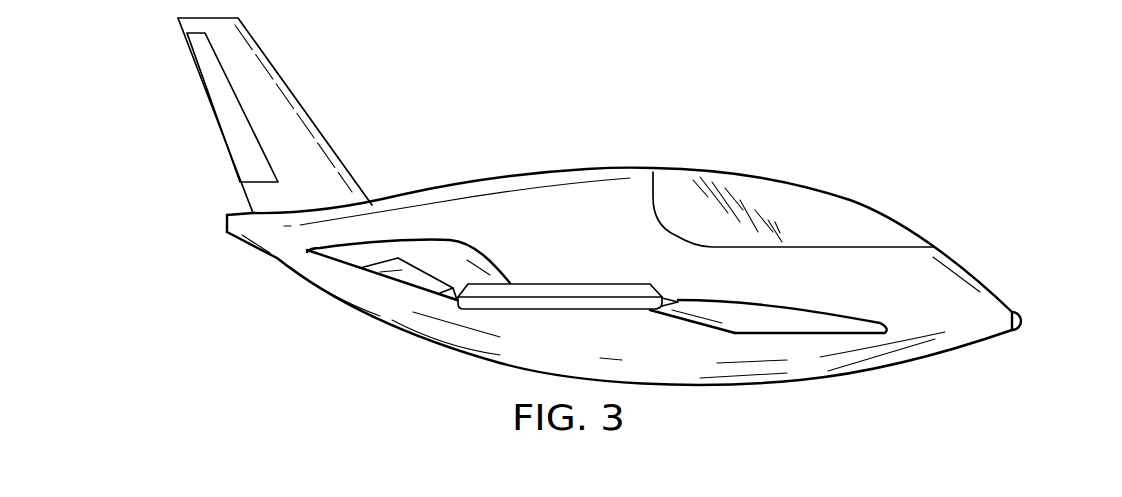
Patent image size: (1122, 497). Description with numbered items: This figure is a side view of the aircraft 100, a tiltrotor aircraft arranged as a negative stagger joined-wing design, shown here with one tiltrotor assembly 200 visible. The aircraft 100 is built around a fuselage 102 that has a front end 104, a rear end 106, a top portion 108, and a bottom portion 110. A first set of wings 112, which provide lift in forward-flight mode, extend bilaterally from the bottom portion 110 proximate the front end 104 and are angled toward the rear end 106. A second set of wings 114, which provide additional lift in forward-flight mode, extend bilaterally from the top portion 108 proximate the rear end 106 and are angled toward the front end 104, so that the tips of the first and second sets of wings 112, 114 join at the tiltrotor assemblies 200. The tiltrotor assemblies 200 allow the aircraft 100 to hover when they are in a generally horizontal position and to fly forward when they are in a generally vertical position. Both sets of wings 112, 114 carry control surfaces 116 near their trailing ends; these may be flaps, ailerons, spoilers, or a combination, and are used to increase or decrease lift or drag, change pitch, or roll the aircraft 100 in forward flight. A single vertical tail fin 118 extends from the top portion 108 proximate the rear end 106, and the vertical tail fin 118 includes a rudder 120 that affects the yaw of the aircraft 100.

The aircraft 100 is at (617, 230).
The fuselage 102 is at (755, 172).
The front end 104 is at (1022, 318).
The rear end 106 is at (227, 222).
The top portion 108 is at (555, 172).
The bottom portion 110 is at (710, 385).
The first set of wings 112 is at (802, 328).
The second set of wings 114 is at (433, 253).
The control surfaces 116 is at (380, 272).
The vertical tail fin 118 is at (275, 70).
The rudder 120 is at (220, 105).
The tiltrotor assemblies 200 is at (593, 282).